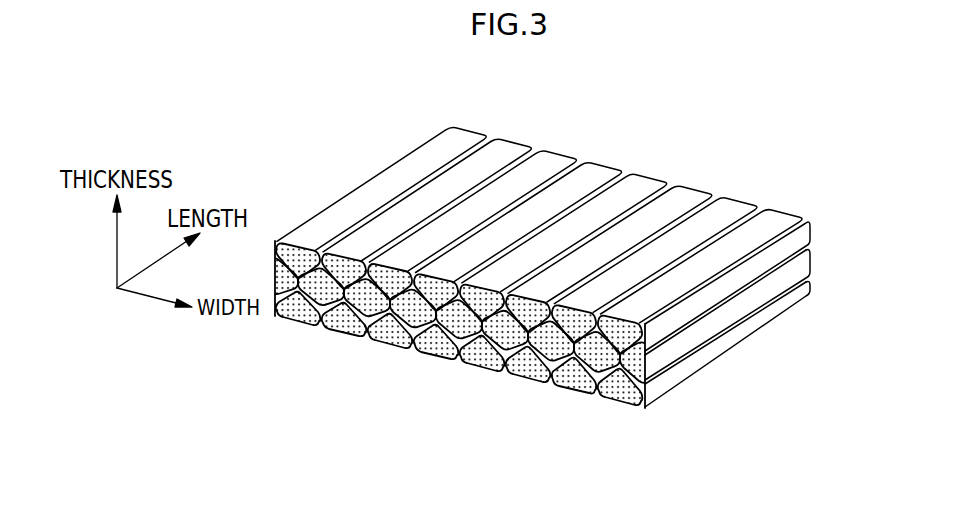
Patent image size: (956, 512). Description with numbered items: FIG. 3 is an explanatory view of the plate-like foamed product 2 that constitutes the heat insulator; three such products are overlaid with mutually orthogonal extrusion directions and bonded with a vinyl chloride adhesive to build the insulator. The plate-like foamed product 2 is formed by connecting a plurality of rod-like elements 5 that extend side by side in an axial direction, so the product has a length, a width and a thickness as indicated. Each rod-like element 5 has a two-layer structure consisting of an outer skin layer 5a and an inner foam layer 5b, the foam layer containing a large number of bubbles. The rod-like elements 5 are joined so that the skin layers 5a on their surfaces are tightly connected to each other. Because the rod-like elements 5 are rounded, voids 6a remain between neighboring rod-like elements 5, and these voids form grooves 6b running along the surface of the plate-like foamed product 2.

The plate-like foamed product 2 is at (320, 143).
The rod-like element 5 is at (330, 212).
The skin layer 5a is at (643, 323).
The foam layer 5b is at (643, 353).
The void 6a is at (550, 356).
The groove 6b is at (747, 215).